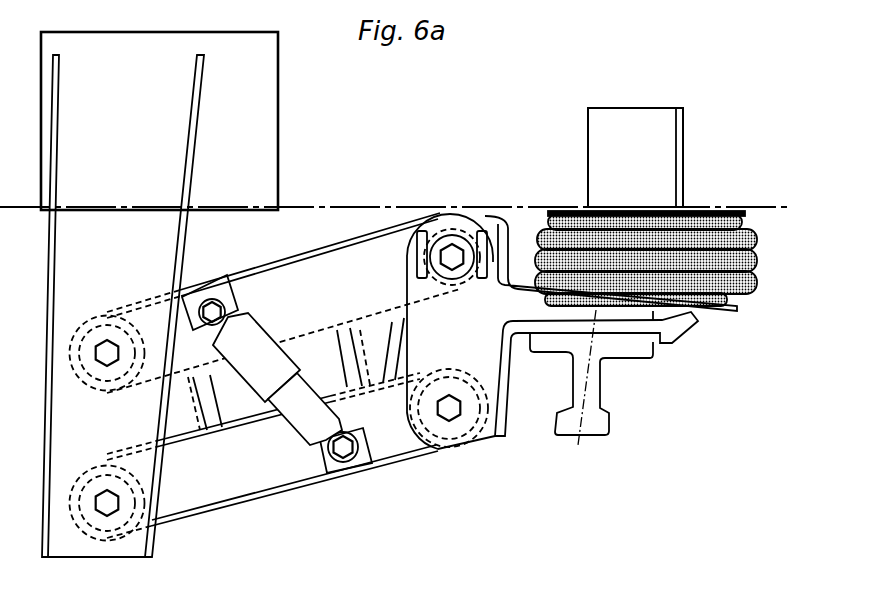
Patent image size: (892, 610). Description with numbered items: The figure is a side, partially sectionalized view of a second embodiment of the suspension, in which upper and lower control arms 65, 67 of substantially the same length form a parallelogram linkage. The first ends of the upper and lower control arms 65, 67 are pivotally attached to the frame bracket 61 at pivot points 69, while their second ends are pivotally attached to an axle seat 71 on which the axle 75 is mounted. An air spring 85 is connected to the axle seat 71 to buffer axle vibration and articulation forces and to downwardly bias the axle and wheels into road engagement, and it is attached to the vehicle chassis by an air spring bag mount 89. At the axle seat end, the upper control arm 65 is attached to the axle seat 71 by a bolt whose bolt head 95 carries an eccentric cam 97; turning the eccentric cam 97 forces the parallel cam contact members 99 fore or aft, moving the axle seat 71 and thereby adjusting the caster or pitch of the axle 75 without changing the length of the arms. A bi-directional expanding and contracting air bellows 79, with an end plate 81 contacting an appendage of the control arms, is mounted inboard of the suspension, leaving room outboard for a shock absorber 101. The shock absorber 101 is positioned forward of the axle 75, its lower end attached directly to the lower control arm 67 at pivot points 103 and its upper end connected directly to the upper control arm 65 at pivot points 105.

The frame bracket 61 is at (120, 49).
The upper control arm 65 is at (370, 258).
The lower control arm 67 is at (193, 493).
The pivot points 69 is at (105, 365).
The axle seat 71 is at (487, 343).
The axle 75 is at (595, 397).
The air bellows 79 is at (318, 350).
The end plate 81 is at (215, 415).
The air spring 85 is at (758, 262).
The air spring bag mount 89 is at (641, 119).
The bolt head 95 is at (452, 250).
The eccentric cam 97 is at (462, 270).
The cam contact members 99 is at (487, 226).
The shock absorber 101 is at (307, 427).
The pivot points 103 is at (347, 458).
The pivot points 105 is at (212, 299).